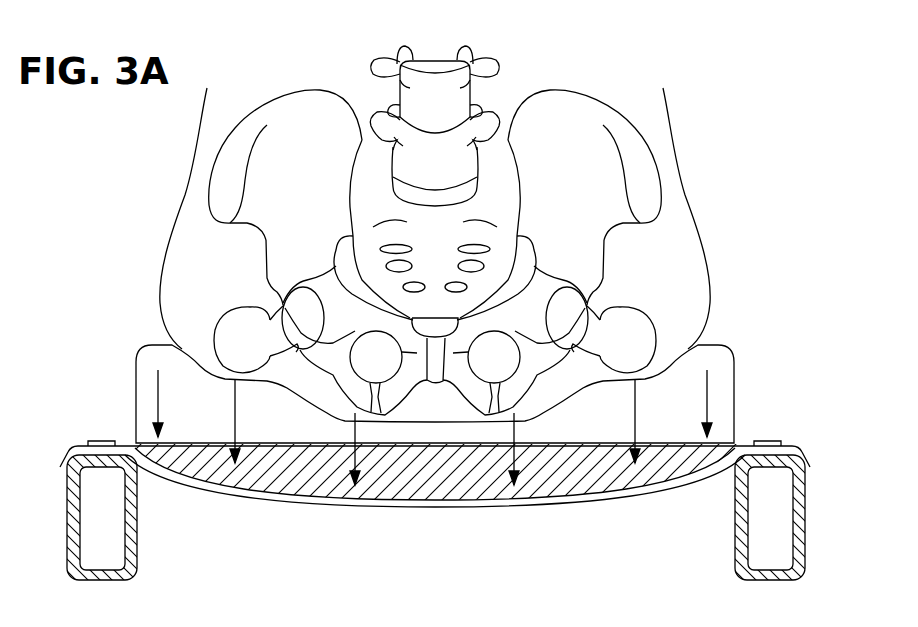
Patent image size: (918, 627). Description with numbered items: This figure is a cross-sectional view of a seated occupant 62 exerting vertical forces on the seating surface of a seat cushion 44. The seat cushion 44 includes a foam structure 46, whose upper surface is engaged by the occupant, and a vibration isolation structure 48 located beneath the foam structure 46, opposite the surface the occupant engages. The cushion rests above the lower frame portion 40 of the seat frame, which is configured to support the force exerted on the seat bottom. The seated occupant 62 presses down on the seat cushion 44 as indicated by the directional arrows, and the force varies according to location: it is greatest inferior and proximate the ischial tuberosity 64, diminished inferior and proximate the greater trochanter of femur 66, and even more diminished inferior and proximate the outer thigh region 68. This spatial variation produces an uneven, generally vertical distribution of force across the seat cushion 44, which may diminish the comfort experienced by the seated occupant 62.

The lower frame portion 40 is at (802, 508).
The seat cushion 44 is at (459, 456).
The foam structure 46 is at (734, 372).
The vibration isolation structure 48 is at (637, 487).
The seated occupant 62 is at (664, 135).
The ischial tuberosity 64 is at (470, 410).
The greater trochanter of femur 66 is at (653, 330).
The outer thigh region 68 is at (172, 299).